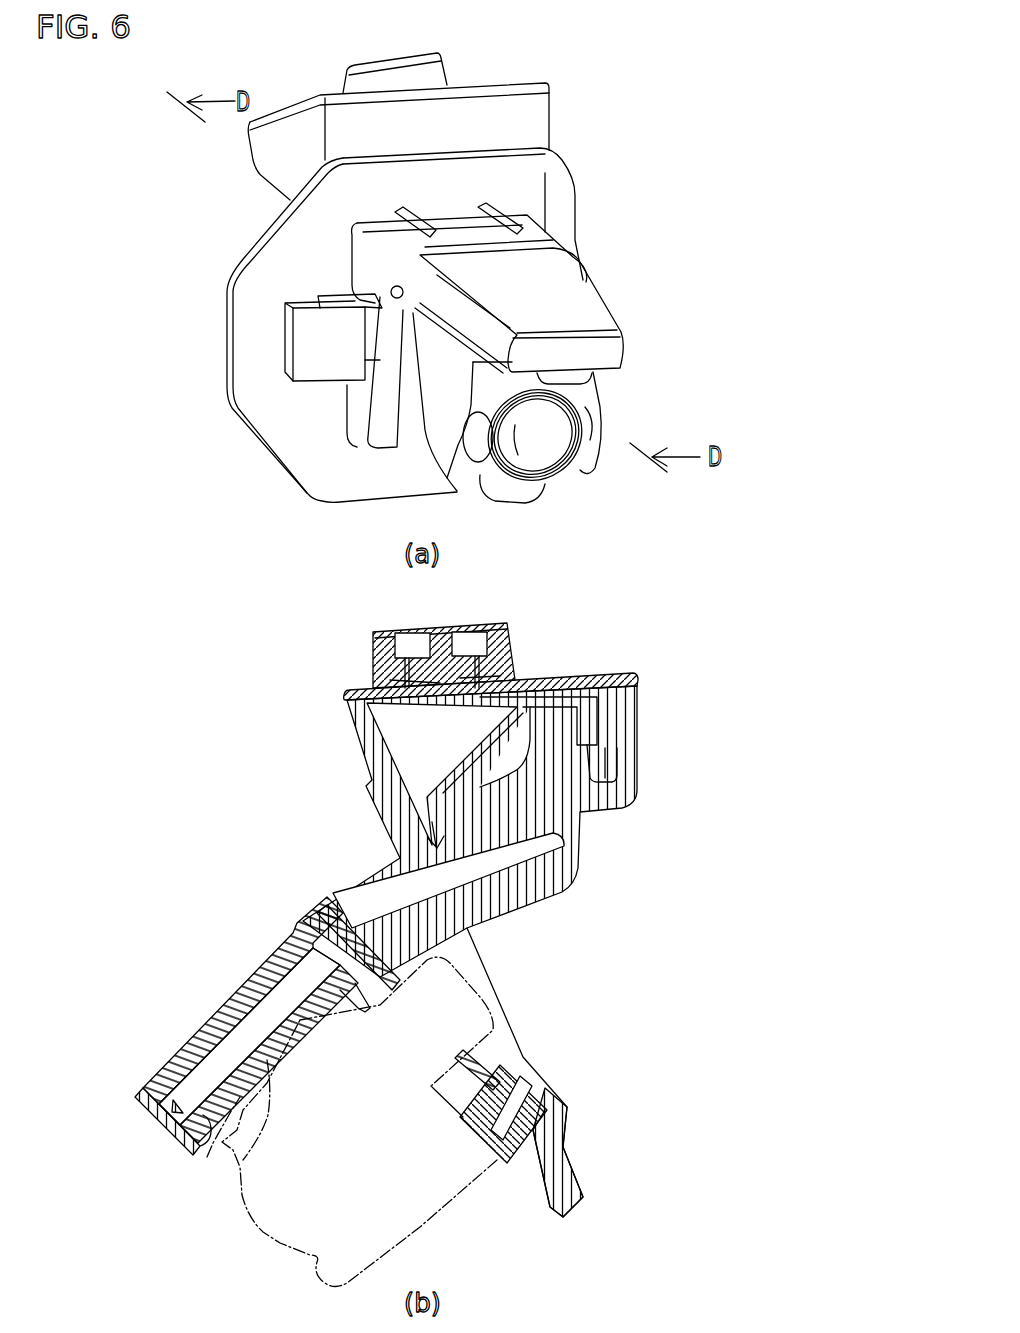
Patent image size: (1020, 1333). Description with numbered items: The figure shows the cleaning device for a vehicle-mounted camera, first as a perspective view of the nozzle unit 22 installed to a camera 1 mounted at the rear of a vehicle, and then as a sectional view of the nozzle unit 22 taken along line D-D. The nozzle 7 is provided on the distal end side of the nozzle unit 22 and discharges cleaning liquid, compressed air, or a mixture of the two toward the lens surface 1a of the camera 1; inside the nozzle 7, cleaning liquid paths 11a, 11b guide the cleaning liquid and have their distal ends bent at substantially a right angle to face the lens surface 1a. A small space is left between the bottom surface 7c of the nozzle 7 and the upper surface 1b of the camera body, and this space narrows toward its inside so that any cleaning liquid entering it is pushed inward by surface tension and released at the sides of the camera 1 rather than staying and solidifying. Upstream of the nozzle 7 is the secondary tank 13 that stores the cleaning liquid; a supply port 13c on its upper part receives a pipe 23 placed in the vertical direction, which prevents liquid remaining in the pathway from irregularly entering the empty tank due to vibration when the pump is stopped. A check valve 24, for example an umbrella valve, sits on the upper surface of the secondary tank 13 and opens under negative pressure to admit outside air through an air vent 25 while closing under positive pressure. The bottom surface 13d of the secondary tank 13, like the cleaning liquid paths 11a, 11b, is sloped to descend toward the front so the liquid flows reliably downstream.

The camera 1 is at (593, 383).
The lens surface 1a is at (550, 453).
The upper surface of the body of the camera 1b is at (240, 1167).
The nozzle 7 is at (583, 307).
The bottom surface of the nozzle 7c is at (213, 1120).
The cleaning liquid path 11a is at (203, 1077).
The cleaning liquid path 11b is at (249, 1036).
The secondary tank 13 is at (413, 753).
The supply port 13c is at (580, 677).
The bottom surface of the secondary tank 13d is at (497, 773).
The nozzle unit 22 is at (590, 126).
The pipe 23 is at (627, 773).
The check valve 24 is at (508, 672).
The air vent 25 is at (373, 663).